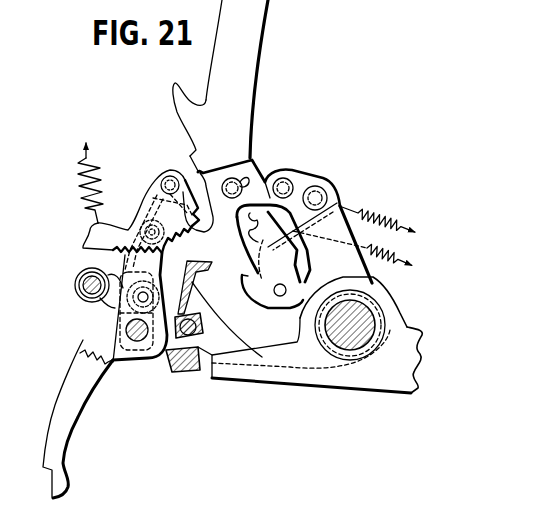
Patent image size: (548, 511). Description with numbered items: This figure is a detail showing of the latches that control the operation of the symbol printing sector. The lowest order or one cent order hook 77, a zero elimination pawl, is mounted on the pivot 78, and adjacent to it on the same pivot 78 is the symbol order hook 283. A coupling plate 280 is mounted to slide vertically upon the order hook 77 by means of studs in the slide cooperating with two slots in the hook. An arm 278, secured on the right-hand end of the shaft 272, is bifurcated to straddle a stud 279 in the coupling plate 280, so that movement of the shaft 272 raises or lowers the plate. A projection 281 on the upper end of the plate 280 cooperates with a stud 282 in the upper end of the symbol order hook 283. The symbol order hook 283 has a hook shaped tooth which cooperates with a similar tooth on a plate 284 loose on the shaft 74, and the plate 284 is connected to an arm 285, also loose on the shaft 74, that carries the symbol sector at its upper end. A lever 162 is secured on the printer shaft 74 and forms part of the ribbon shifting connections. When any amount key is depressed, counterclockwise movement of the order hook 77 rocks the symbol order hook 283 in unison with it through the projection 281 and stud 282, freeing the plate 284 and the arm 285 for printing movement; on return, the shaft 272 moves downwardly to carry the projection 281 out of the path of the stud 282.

The arm 285 is at (241, 101).
The plate 284 is at (252, 265).
The symbol order hook 283 is at (195, 168).
The stud 282 is at (163, 177).
The projection 281 is at (152, 196).
The coupling plate 280 is at (108, 255).
The shaft 272 is at (75, 285).
The arm 278 is at (110, 305).
The stud 279 is at (118, 320).
The pivot 78 is at (143, 340).
The order hook 77 is at (113, 366).
The shaft 74 is at (358, 316).
The lever 162 is at (425, 343).